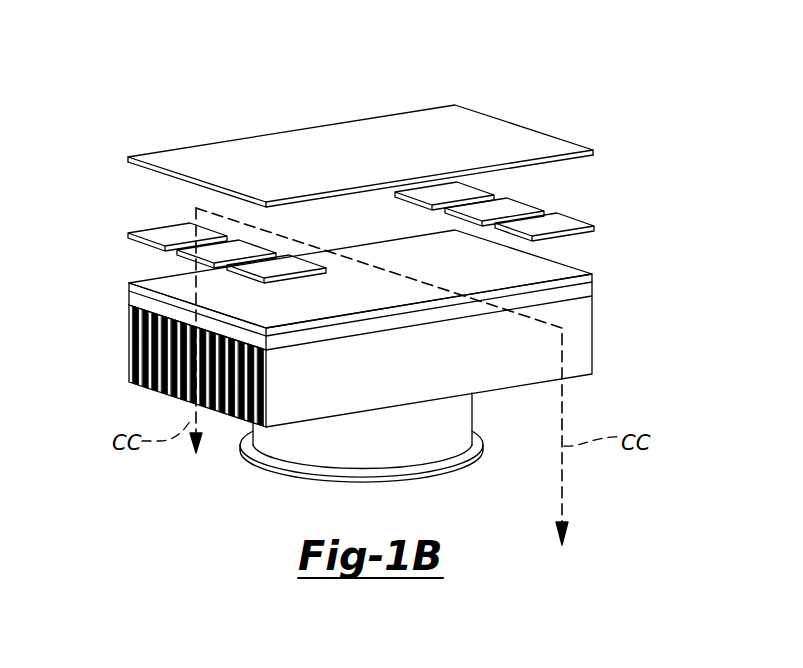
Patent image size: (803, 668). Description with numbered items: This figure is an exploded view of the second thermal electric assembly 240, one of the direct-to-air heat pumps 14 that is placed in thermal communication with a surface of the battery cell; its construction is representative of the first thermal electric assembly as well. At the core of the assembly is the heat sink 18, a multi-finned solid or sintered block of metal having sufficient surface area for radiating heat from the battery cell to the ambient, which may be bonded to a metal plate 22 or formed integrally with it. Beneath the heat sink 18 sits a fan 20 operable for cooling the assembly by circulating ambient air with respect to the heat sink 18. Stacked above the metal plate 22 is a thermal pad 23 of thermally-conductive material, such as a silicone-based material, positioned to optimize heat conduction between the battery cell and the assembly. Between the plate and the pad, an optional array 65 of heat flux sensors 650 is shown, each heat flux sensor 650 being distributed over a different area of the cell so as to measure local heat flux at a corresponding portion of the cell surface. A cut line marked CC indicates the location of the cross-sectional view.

The direct-to-air heat pump 14 is at (89, 119).
The heat sink 18 is at (451, 373).
The fan 20 is at (380, 455).
The metal plate 22 is at (134, 293).
The thermal pad 23 is at (202, 165).
The array of heat flux sensors 65 is at (374, 226).
The heat flux sensor 650 is at (155, 233).
The second thermal electric assembly 240 is at (544, 61).